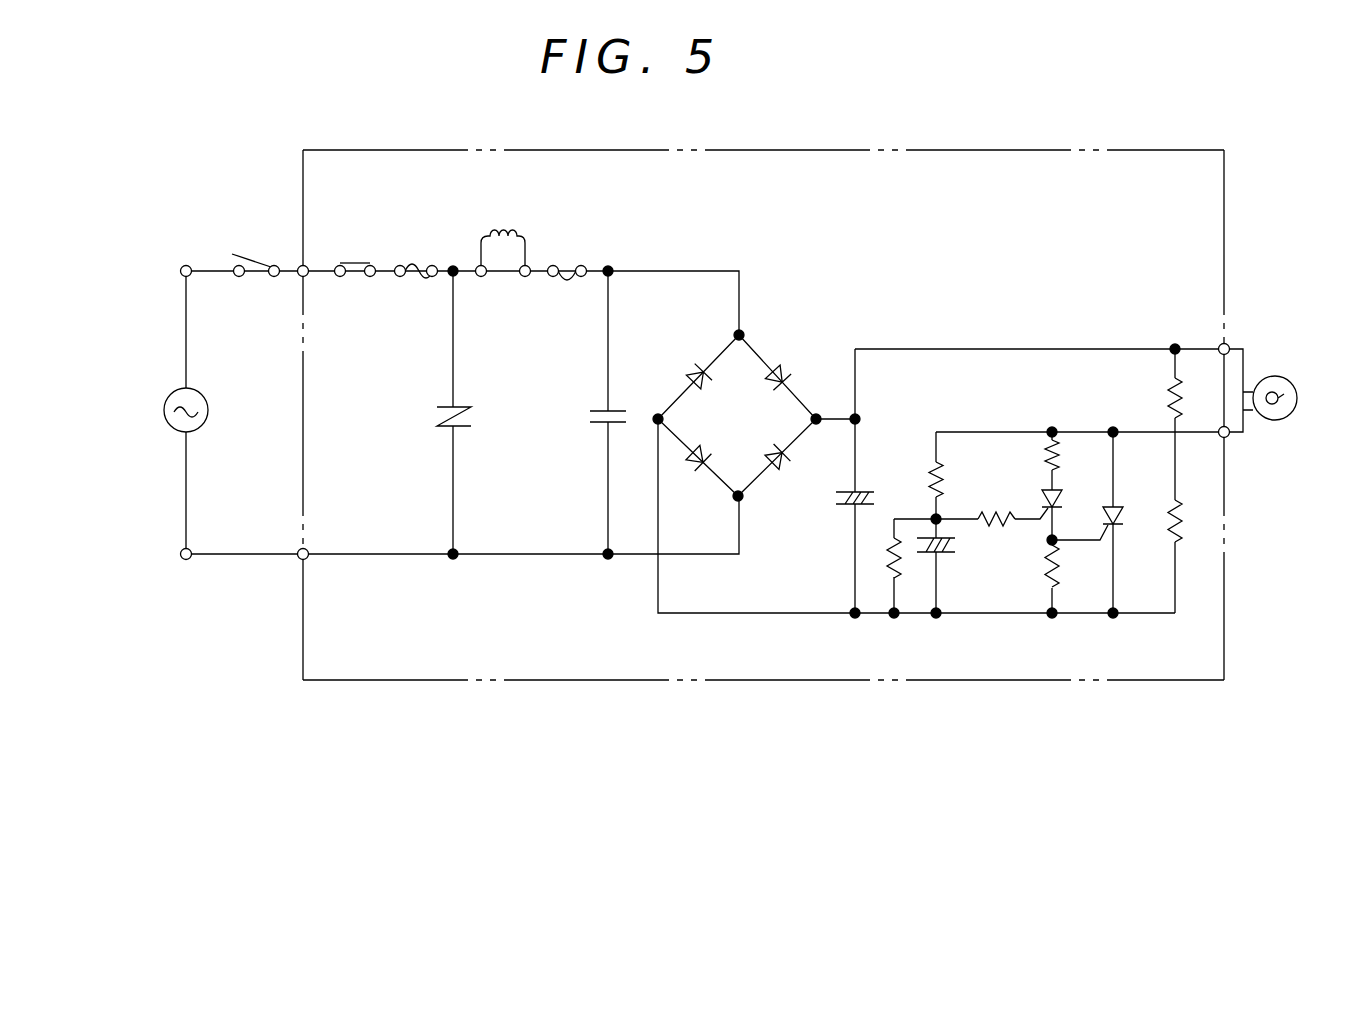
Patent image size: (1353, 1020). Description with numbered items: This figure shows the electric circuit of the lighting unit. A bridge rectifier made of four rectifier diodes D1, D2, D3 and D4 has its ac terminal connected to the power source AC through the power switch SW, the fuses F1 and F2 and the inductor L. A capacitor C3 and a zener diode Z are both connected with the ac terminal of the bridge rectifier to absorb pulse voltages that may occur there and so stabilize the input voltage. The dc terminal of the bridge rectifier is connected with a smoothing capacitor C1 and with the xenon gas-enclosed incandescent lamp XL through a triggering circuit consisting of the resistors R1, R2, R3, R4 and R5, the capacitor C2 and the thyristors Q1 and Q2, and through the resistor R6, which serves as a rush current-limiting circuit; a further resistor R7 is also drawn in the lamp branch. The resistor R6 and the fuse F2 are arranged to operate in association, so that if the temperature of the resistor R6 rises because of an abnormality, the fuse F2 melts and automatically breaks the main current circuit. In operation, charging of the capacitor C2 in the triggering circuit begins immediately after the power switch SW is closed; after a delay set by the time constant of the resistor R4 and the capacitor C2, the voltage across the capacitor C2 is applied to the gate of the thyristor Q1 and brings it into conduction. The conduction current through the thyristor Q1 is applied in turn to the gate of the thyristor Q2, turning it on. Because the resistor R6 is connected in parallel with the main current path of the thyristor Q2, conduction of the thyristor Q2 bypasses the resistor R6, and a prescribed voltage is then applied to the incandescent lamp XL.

The ac source AC is at (167, 394).
The power switch SW is at (302, 248).
The fuse F1 is at (418, 253).
The inductor L is at (503, 231).
The fuse F2 is at (570, 255).
The zener diode Z is at (447, 398).
The capacitor C3 is at (592, 396).
The rectifier diode D1 is at (683, 365).
The rectifier diode D2 is at (693, 480).
The rectifier diode D3 is at (791, 355).
The rectifier diode D4 is at (789, 479).
The smoothing capacitor C1 is at (877, 483).
The resistor R1 is at (965, 483).
The resistor R4 is at (1008, 497).
The resistor R2 is at (932, 561).
The capacitor C2 is at (963, 571).
The resistor R3 is at (1079, 455).
The thyristor Q1 is at (1071, 507).
The resistor R5 is at (1079, 576).
The thyristor Q2 is at (1132, 538).
The resistor R6 is at (578, 280).
The resistor R7 is at (1148, 398).
The xenon gas-enclosed incandescent lamp XL is at (1294, 398).